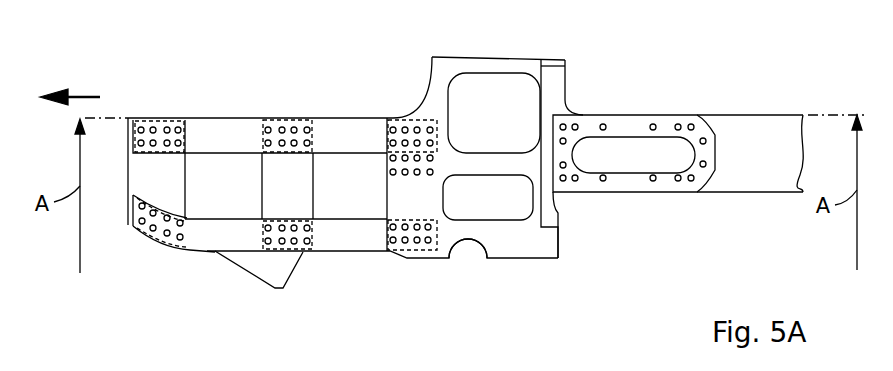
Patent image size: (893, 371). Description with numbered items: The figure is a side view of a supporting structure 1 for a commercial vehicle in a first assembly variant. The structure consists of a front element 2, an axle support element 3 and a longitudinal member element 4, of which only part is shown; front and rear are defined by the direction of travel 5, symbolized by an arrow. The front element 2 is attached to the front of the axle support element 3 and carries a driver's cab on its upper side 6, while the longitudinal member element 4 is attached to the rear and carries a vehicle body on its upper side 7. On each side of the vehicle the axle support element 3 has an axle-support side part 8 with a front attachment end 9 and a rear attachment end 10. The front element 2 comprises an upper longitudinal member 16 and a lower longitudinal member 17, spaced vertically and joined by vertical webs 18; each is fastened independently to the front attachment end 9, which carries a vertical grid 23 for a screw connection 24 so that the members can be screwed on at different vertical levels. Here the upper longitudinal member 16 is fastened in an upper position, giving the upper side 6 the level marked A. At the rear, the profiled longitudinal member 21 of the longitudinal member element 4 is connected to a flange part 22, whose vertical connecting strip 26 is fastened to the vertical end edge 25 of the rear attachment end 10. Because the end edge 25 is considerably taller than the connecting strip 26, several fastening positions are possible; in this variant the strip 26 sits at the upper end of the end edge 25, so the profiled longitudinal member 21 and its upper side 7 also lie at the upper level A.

The supporting structure 1 is at (170, 82).
The front element 2 is at (348, 275).
The axle support element 3 is at (460, 259).
The longitudinal member element 4 is at (748, 173).
The direction of travel 5 is at (82, 97).
The upper side of the front element 6 is at (222, 116).
The upper side of the longitudinal member element 7 is at (738, 112).
The axle-support side part 8 is at (507, 246).
The front attachment end 9 is at (405, 198).
The rear attachment end 10 is at (538, 246).
The upper longitudinal member 16 is at (342, 113).
The lower longitudinal member 17 is at (205, 242).
The vertical web 18 is at (275, 198).
The profiled longitudinal member 21 is at (782, 178).
The flange part 22 is at (623, 127).
The vertical grid 23 is at (447, 153).
The screw connection 24 is at (405, 175).
The vertical end edge 25 is at (560, 244).
The vertical connecting strip 26 is at (553, 72).